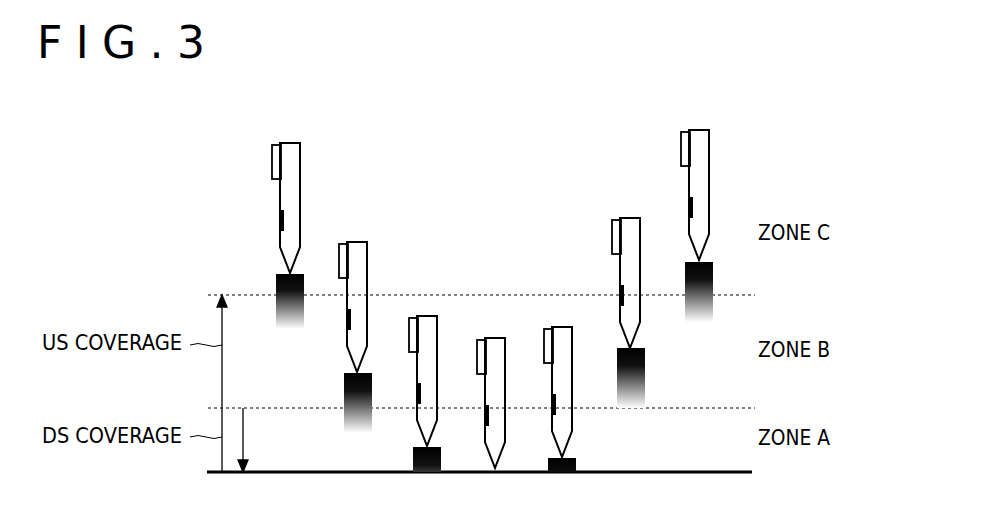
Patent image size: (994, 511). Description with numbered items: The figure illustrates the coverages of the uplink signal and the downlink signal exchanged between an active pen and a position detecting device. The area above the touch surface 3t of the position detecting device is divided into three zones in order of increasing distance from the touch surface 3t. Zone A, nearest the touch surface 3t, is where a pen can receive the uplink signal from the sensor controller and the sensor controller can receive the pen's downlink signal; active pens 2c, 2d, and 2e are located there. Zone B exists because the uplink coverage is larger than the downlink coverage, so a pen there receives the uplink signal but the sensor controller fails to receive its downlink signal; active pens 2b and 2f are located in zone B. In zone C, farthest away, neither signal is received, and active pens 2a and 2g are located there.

The active pen 2a is at (287, 143).
The active pen 2b is at (356, 242).
The active pen 2c is at (423, 316).
The active pen 2d is at (490, 338).
The active pen 2e is at (558, 327).
The active pen 2f is at (628, 218).
The active pen 2g is at (695, 130).
The touch surface 3t is at (294, 470).